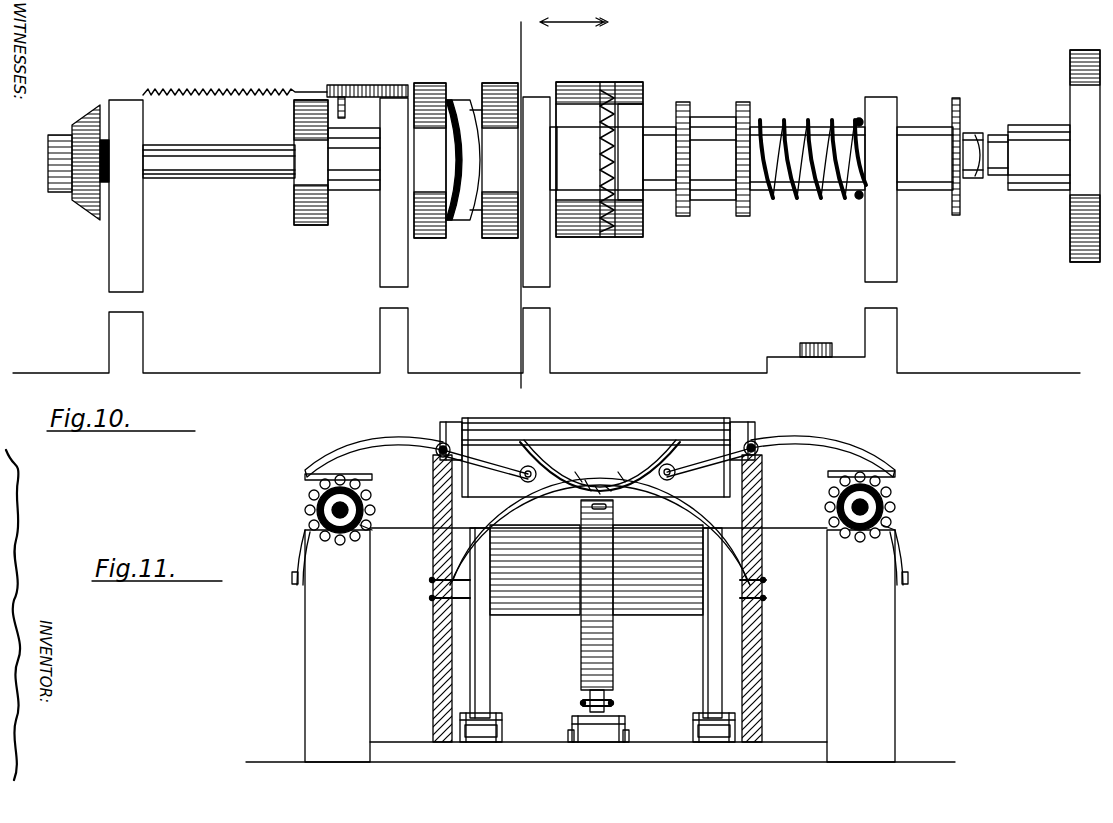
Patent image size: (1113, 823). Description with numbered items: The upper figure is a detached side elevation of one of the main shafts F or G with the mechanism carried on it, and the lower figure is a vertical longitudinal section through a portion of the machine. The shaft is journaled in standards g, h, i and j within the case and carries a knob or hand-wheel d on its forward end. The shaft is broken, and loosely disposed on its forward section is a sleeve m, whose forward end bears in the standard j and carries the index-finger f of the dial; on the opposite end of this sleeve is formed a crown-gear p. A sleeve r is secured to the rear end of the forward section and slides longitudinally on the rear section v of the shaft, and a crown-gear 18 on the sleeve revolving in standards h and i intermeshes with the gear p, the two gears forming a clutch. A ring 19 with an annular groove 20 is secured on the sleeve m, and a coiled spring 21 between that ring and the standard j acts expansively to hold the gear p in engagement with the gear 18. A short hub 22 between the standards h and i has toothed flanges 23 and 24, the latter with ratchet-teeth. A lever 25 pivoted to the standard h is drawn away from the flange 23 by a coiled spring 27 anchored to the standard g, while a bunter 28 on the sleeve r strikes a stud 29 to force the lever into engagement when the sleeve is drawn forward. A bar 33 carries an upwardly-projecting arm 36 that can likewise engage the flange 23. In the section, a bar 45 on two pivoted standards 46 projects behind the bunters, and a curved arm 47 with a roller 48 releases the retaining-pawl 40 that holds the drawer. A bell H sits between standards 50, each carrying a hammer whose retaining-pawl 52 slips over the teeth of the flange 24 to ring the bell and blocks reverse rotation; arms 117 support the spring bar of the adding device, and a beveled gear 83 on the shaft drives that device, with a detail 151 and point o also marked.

In FIG. 10, the beveled gear 83 is at (92, 105).
In FIG. 10, the coiled spring 27 is at (218, 97).
In FIG. 10, the annular flange or bunter 28 is at (296, 105).
In FIG. 10, the lever 25 is at (365, 85).
In FIG. 10, the stud 29 is at (345, 108).
In FIG. 10, the toothed flange 23 is at (435, 83).
In FIG. 10, the short sleeve or hub 22 is at (462, 220).
In FIG. 11, the short sleeve or hub 22 is at (300, 485).
In FIG. 10, the toothed flange 24 is at (502, 83).
In FIG. 11, the toothed flange 24 is at (300, 512).
In FIG. 10, the crown-gear 18 is at (575, 82).
In FIG. 10, the annular groove 20 is at (713, 117).
In FIG. 10, the ring 19 is at (760, 120).
In FIG. 10, the coiled spring 21 is at (803, 120).
In FIG. 10, the crown-gear p is at (625, 82).
In FIG. 10, the sleeve m is at (857, 120).
In FIG. 10, the standard j is at (865, 255).
In FIG. 10, the index-finger f is at (975, 130).
In FIG. 10, the shaft G is at (998, 135).
In FIG. 11, the shaft G is at (370, 530).
In FIG. 10, the knob or hand-wheel d is at (1070, 220).
In FIG. 10, the standard g is at (143, 225).
In FIG. 10, the rear section of shaft v is at (230, 178).
In FIG. 10, the sleeve r is at (348, 190).
In FIG. 10, the standard h is at (380, 262).
In FIG. 11, the standard h is at (305, 642).
In FIG. 10, the standard i is at (523, 258).
In FIG. 10, the center line o is at (560, 204).
In FIG. 11, the retaining-pawl 52 is at (393, 438).
In FIG. 11, the arms 117 is at (445, 425).
In FIG. 11, the link 151 is at (500, 470).
In FIG. 11, the bell H is at (572, 455).
In FIG. 11, the upwardly-projecting arm 36 is at (297, 548).
In FIG. 11, the bar 33 is at (294, 580).
In FIG. 11, the shaft F is at (893, 535).
In FIG. 11, the bar 45 is at (650, 530).
In FIG. 11, the pivoted standards 46 is at (490, 640).
In FIG. 11, the curved arm 47 is at (613, 618).
In FIG. 11, the roller 48 is at (612, 700).
In FIG. 11, the retaining-pawl 40 is at (625, 728).
In FIG. 11, the standard 50 is at (433, 670).